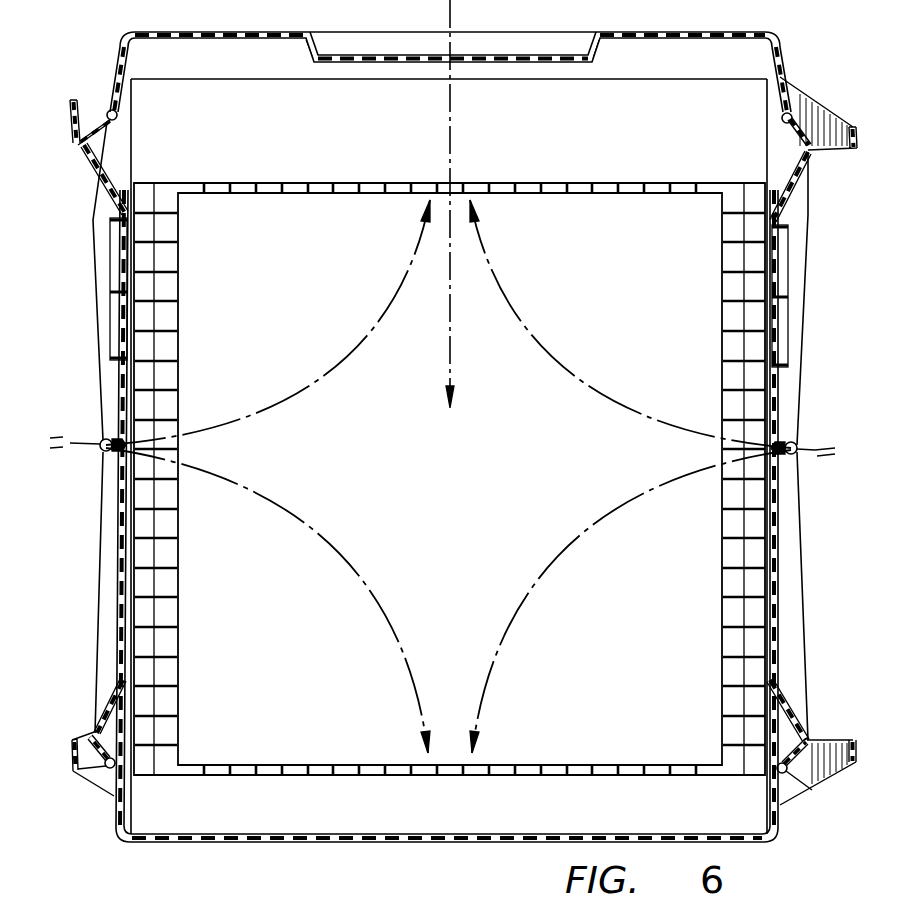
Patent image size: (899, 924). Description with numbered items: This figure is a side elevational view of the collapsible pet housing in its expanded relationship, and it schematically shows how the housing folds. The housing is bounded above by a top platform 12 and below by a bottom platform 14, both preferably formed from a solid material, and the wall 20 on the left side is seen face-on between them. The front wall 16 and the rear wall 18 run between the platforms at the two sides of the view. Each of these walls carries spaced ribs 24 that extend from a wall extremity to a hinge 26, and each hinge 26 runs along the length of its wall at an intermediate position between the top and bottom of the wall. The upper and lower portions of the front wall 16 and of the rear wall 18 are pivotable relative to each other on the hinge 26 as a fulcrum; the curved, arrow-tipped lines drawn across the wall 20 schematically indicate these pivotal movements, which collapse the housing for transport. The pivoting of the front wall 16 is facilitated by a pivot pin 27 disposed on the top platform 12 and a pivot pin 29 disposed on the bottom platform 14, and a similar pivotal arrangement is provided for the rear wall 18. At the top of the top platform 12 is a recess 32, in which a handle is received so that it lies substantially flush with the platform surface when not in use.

The top platform 12 is at (707, 32).
The bottom platform 14 is at (263, 843).
The front wall 16 is at (120, 595).
The rear wall 18 is at (777, 612).
The wall on the left side 20 is at (448, 376).
The spaced ribs 24 is at (112, 383).
The hinge 26 is at (101, 452).
The pivot pin 27 is at (118, 117).
The pivot pin 29 is at (100, 775).
The recess 32 is at (373, 55).